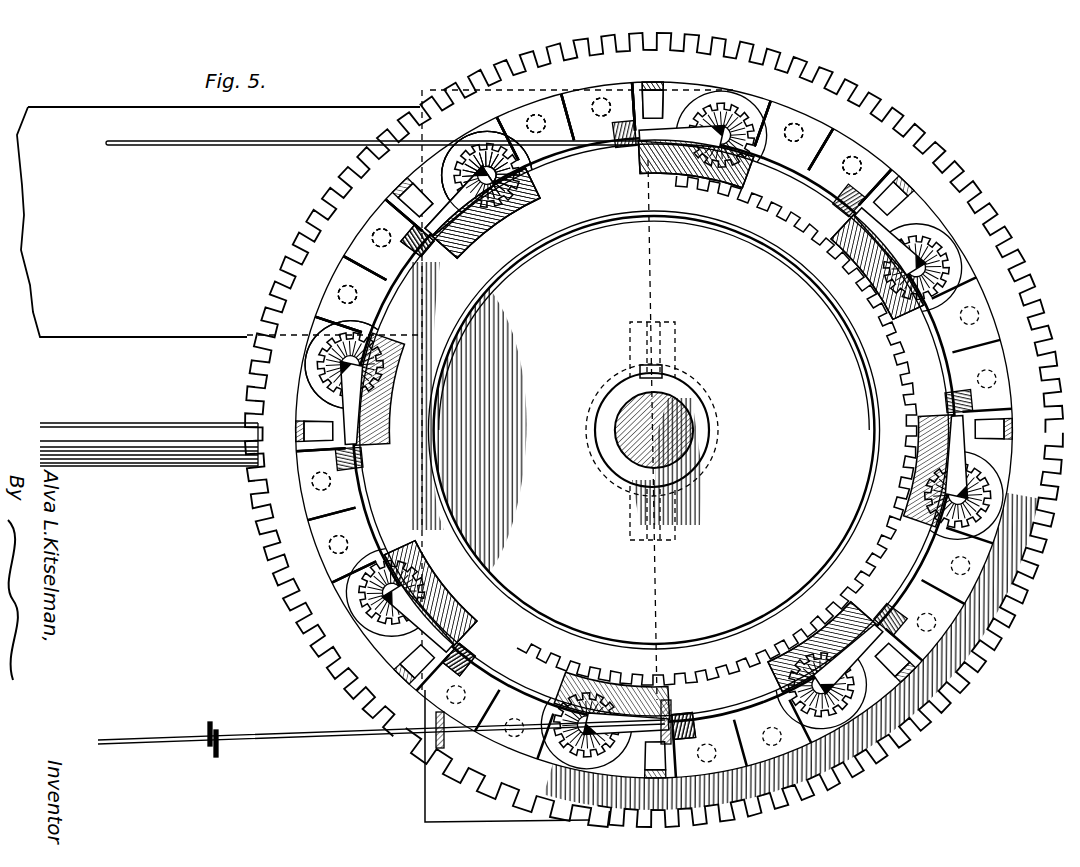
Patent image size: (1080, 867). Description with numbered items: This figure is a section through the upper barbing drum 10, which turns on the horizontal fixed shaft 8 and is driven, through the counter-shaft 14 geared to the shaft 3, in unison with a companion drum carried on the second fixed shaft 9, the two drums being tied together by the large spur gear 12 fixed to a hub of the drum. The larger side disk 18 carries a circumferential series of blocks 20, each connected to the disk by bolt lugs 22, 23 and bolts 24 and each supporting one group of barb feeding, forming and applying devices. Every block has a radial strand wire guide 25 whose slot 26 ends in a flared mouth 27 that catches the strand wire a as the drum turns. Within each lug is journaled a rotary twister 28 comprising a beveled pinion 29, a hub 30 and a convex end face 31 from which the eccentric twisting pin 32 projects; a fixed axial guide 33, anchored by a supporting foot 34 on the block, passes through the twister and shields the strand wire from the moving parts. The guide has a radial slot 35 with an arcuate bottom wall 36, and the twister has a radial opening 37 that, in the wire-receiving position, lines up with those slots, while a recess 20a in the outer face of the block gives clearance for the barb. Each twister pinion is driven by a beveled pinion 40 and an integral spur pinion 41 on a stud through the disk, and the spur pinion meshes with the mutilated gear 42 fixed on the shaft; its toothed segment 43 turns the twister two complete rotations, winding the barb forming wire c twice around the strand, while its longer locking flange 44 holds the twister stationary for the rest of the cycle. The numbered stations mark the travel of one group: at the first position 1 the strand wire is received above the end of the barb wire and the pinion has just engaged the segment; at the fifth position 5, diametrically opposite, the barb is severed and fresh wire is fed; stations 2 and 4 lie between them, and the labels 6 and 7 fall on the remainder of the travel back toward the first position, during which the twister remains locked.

The barbing drum 10 is at (893, 112).
The spur gear 12 is at (697, 458).
The counter-shaft 14 is at (140, 442).
The fifth position 5 is at (407, 519).
The strand wire a is at (342, 752).
The hub 6 is at (712, 398).
The fixed shaft 8 is at (573, 312).
The beveled pinion 40 is at (614, 418).
The spur pinion 41 is at (653, 430).
The mutilated gear 42 is at (653, 430).
The toothed segment 43 is at (654, 325).
The locking flange 44 is at (480, 430).
The arcuate bottom wall 36 is at (516, 163).
The radial slot 35 is at (457, 174).
The radial opening 37 is at (420, 142).
The beveled pinion 29 is at (402, 184).
The rotary twister 28 is at (406, 192).
The hub 30 is at (374, 262).
The convex end face 31 is at (371, 265).
The fixed axial guide 33 is at (487, 214).
The twisting pin 32 is at (487, 226).
The supporting foot 34 is at (500, 171).
The strand wire guide 25 is at (752, 145).
The guide slot 26 is at (655, 104).
The flared mouth 27 is at (672, 80).
The first position 1 is at (692, 173).
The clutch segment 2 is at (875, 268).
The shaft 3 is at (945, 524).
The clutch segment 4 is at (790, 697).
The clutch segment 7 is at (363, 360).
The fixed shaft 9 is at (378, 563).
The bolt lug 22 is at (824, 147).
The bolt lug 23 is at (573, 119).
The bolt 24 is at (696, 129).
The barb forming wire c is at (904, 424).
The block 20 is at (432, 588).
The recess 20a is at (585, 676).
The side disk 18 is at (333, 508).